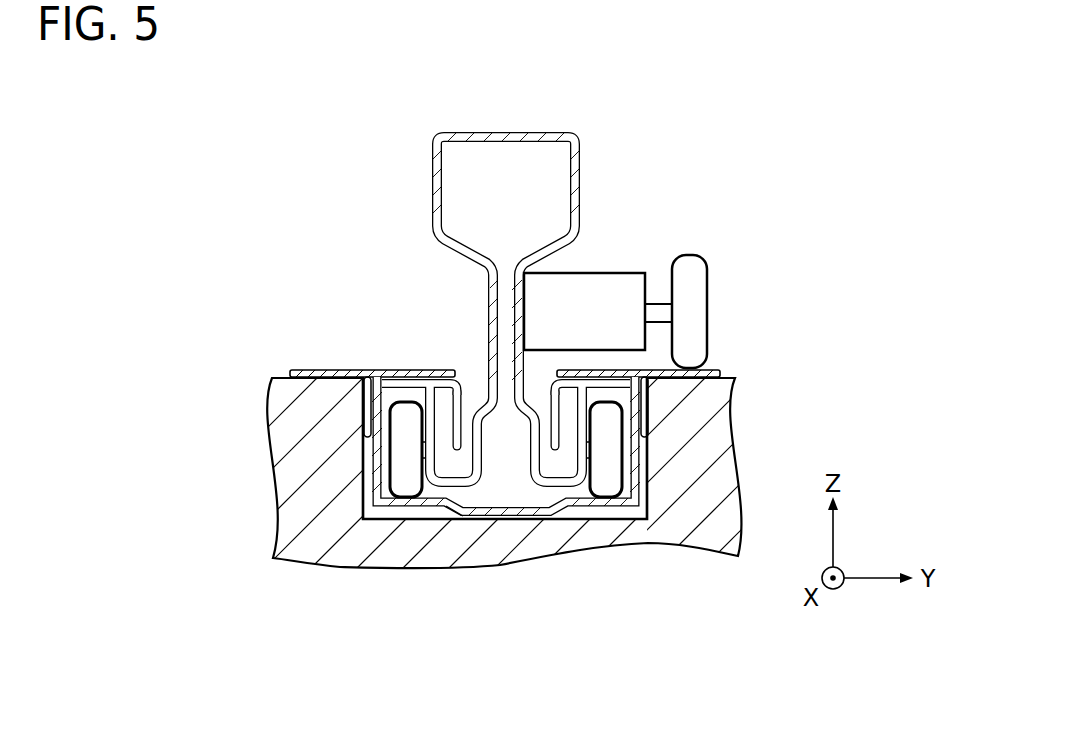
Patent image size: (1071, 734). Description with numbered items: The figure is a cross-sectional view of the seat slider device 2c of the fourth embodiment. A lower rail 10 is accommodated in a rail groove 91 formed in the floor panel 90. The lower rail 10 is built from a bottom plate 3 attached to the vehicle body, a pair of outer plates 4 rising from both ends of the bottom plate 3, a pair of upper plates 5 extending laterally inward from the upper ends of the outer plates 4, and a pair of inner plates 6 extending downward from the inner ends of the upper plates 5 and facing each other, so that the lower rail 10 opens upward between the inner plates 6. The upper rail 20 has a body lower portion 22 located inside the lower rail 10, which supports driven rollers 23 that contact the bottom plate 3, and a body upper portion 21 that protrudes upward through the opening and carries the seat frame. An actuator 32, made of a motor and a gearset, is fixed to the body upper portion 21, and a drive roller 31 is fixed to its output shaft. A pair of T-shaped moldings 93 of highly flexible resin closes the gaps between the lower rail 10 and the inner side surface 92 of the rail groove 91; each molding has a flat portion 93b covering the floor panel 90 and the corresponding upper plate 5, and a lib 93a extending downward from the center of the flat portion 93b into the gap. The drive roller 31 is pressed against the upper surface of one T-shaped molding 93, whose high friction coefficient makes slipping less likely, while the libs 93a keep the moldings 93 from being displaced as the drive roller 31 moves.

The seat slider device 2c is at (503, 356).
The bottom plate 3 is at (542, 515).
The outer plates 4 is at (400, 458).
The upper plates 5 is at (395, 372).
The inner plates 6 is at (458, 404).
The lower rail 10 is at (503, 513).
The upper rail 20 is at (474, 182).
The body upper portion 21 is at (523, 134).
The body lower portion 22 is at (510, 495).
The driven rollers 23 is at (397, 490).
The drive roller 31 is at (692, 262).
The actuator 32 is at (607, 283).
The floor panel 90 is at (720, 437).
The rail groove 91 is at (477, 506).
The inner side surface 92 is at (367, 514).
The T-shaped moldings 93 is at (506, 391).
The lib 93a is at (365, 412).
The flat portion 93b is at (292, 372).